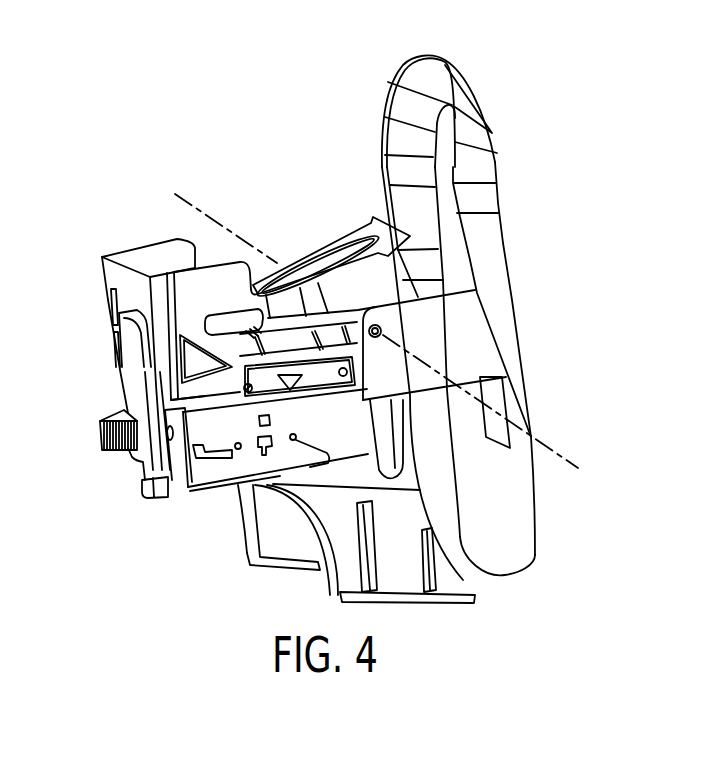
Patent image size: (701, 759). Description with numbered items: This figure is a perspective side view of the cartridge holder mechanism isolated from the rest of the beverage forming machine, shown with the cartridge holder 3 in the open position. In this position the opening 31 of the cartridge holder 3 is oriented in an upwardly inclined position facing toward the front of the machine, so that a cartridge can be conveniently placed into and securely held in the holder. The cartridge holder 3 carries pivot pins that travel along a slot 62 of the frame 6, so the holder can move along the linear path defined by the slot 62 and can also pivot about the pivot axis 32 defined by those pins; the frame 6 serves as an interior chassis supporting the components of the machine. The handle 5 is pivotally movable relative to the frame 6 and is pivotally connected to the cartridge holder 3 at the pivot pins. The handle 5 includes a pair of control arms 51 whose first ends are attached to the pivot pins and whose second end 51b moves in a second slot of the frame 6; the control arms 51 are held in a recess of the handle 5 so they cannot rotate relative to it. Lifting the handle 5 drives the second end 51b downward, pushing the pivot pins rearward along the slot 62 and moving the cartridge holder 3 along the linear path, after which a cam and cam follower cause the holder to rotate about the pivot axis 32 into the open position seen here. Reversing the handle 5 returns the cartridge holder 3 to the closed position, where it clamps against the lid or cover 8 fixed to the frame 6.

The cartridge holder 3 is at (371, 232).
The opening 31 is at (318, 266).
The pivot axis 32 is at (563, 458).
The handle 5 is at (473, 232).
The control arms 51 is at (383, 427).
The second end 51b is at (387, 468).
The frame 6 is at (447, 573).
The slot 62 is at (232, 322).
The lid or cover 8 is at (128, 388).